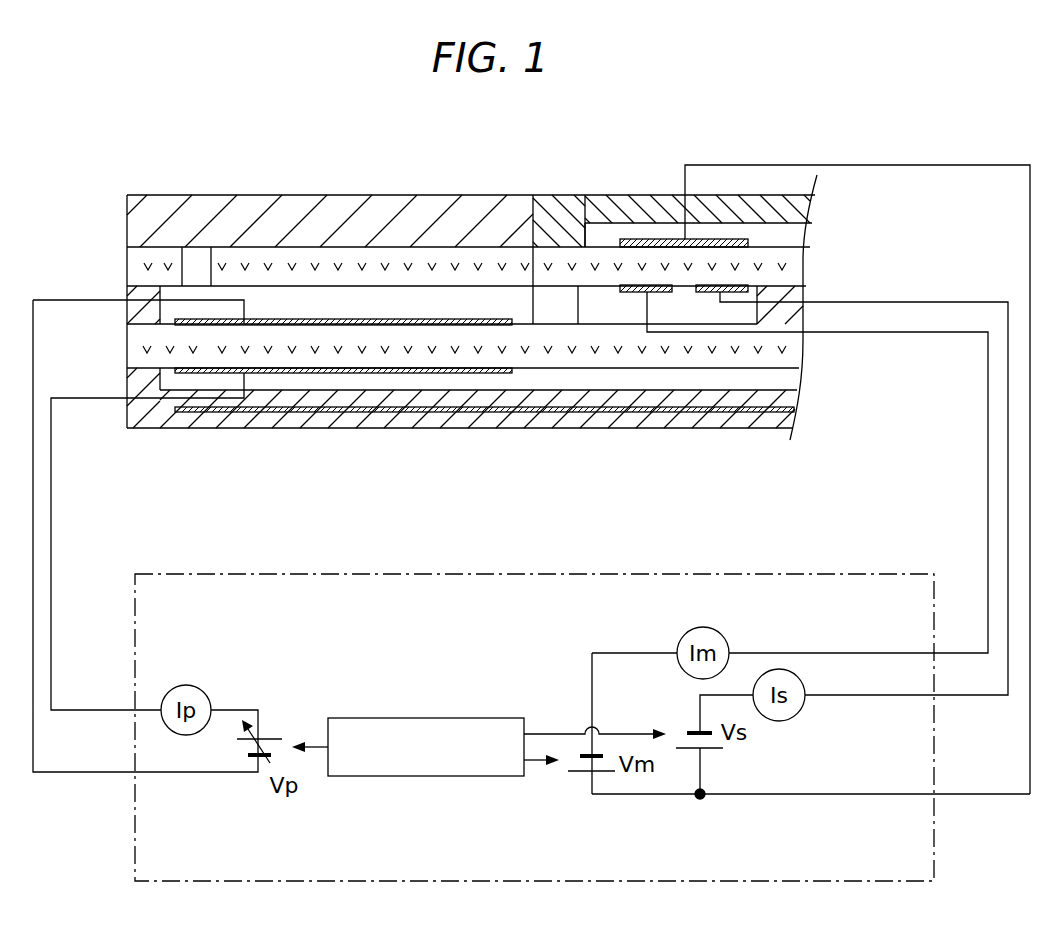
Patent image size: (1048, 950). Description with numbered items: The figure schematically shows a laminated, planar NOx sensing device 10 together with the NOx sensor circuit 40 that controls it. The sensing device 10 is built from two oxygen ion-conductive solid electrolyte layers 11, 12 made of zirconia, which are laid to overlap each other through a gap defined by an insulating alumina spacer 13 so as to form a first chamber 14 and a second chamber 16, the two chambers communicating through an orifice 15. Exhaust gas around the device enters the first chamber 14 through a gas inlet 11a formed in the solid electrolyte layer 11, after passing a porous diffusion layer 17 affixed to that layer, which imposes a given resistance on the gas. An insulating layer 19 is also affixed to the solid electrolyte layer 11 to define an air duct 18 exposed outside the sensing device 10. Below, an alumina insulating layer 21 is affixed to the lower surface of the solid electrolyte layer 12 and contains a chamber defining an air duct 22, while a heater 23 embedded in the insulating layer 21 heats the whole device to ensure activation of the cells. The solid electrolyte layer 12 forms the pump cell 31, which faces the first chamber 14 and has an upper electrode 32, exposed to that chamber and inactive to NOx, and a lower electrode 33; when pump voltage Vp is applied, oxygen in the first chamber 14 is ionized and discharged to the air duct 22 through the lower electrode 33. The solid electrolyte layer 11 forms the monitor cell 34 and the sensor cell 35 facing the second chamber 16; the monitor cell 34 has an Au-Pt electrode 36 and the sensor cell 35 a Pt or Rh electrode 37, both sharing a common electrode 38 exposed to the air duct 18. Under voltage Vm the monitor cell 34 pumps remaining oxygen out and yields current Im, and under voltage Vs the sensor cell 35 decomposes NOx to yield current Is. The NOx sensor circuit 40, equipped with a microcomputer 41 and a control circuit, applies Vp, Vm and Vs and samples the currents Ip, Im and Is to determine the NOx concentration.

The sensing device 10 is at (143, 145).
The solid electrolyte layer 11 is at (128, 262).
The gas inlet 11a is at (200, 262).
The solid electrolyte layer 12 is at (133, 346).
The spacer 13 is at (133, 310).
The first chamber 14 is at (308, 293).
The orifice 15 is at (560, 293).
The second chamber 16 is at (603, 295).
The porous diffusion layer 17 is at (390, 205).
The air duct 18 is at (643, 233).
The insulating layer 19 is at (620, 205).
The insulating layer 21 is at (142, 410).
The air duct 22 is at (525, 380).
The heater 23 is at (238, 413).
The pump cell 31 is at (300, 352).
The upper electrode 32 is at (373, 327).
The lower electrode 33 is at (444, 365).
The monitor cell 34 is at (680, 273).
The sensor cell 35 is at (733, 273).
The electrode 36 is at (630, 292).
The electrode 37 is at (703, 292).
The common electrode 38 is at (740, 243).
The NOx sensor circuit 40 is at (135, 848).
The microcomputer 41 is at (465, 717).